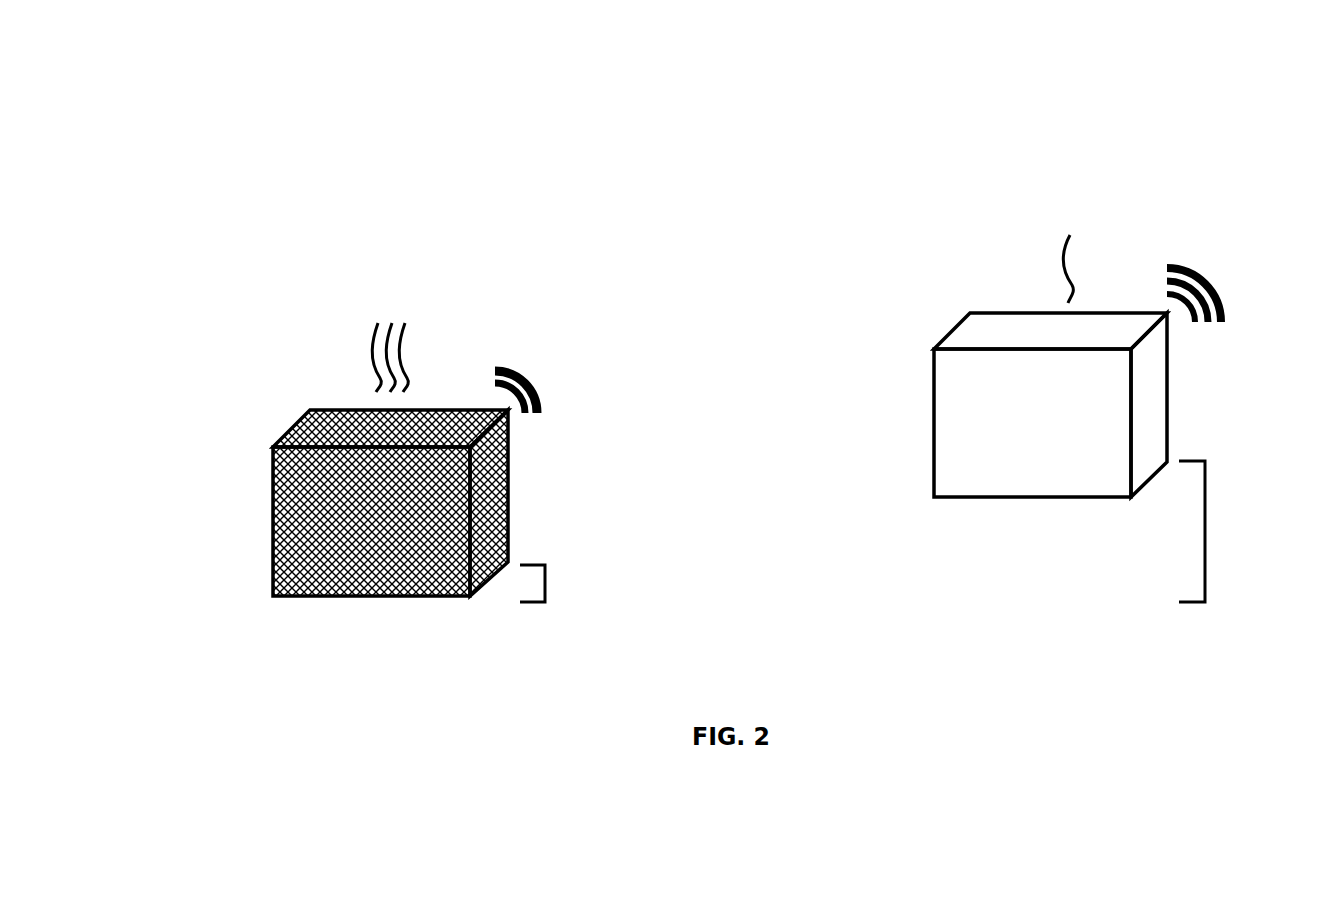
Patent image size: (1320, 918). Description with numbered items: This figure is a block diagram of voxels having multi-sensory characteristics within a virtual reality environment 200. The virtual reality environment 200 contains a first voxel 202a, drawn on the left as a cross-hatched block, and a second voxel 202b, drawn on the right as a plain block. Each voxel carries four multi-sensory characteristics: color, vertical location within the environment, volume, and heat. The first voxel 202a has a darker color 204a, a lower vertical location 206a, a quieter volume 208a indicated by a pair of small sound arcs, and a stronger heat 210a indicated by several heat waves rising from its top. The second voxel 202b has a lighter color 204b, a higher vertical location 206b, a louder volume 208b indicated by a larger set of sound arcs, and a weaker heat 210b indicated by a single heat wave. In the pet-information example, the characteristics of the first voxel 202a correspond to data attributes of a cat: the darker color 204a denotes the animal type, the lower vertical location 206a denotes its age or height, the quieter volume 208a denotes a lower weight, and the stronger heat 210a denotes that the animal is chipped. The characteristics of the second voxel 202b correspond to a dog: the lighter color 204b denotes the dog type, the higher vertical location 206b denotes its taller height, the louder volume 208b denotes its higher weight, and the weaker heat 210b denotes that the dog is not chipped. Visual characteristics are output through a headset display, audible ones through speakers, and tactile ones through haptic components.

The virtual reality environment 200 is at (538, 140).
The first voxel 202a is at (225, 372).
The darker color 204a is at (313, 525).
The lower vertical location 206a is at (570, 583).
The quieter volume 208a is at (518, 371).
The stronger heat 210a is at (376, 368).
The second voxel 202b is at (965, 265).
The lighter color 204b is at (992, 429).
The higher vertical location 206b is at (1228, 531).
The louder volume 208b is at (1182, 267).
The weaker heat 210b is at (1065, 255).